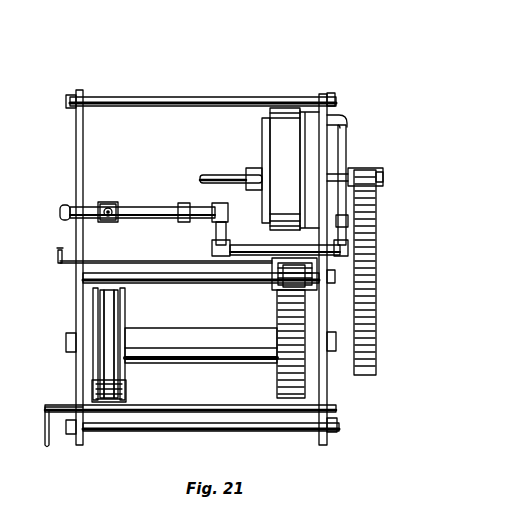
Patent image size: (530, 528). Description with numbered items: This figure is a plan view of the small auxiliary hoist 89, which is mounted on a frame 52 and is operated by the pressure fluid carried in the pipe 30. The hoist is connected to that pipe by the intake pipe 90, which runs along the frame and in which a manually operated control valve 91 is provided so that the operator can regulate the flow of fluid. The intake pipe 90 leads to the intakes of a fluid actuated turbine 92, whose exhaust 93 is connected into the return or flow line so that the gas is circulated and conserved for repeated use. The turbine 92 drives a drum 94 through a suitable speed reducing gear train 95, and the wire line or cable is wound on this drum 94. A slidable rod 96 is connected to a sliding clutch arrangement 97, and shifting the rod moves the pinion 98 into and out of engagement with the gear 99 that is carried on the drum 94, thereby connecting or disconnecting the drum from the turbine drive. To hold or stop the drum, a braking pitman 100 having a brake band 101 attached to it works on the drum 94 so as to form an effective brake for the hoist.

The machine frame 52 is at (7, 61).
The auxiliary hoist 89 is at (80, 162).
The fluid actuated turbine 92 is at (288, 114).
The exhaust 93 is at (222, 173).
The pipe 30 is at (60, 212).
The manually operated control valve 91 is at (112, 202).
The intake pipe 90 is at (218, 233).
The slidable rod 96 is at (58, 263).
The gear train 95 is at (372, 244).
The sliding clutch arrangement 97 is at (270, 268).
The pinion 98 is at (288, 285).
The gear 99 is at (280, 389).
The drum 94 is at (186, 340).
The brake band 101 is at (108, 350).
The braking pitman 100 is at (146, 405).